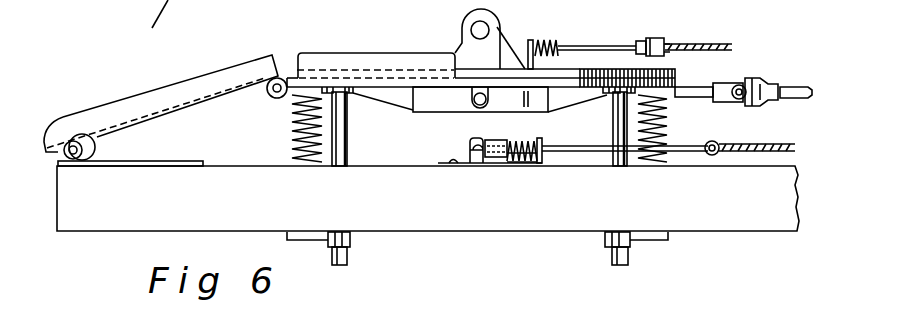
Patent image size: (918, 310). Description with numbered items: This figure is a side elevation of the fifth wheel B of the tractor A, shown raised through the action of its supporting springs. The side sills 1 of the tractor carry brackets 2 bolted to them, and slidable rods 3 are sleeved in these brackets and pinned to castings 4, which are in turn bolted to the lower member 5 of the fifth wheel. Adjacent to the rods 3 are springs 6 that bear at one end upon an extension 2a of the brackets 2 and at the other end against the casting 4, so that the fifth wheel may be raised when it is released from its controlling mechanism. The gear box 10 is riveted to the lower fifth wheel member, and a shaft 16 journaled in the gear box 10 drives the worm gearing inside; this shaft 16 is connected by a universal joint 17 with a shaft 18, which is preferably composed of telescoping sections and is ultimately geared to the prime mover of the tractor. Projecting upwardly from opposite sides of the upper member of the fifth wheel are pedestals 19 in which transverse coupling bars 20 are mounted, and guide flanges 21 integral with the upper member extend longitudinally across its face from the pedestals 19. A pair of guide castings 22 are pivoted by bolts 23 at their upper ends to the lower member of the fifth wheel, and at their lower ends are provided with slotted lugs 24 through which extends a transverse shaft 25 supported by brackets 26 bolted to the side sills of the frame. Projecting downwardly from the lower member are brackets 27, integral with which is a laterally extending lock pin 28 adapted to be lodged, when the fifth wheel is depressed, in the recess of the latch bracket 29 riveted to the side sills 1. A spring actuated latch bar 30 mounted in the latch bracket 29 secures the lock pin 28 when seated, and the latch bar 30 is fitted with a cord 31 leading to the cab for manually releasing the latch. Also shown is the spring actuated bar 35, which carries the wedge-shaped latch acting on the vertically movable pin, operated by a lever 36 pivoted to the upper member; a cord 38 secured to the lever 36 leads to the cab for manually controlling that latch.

The side sills 1 is at (428, 198).
The brackets 2 is at (350, 240).
The extension of the brackets 2a is at (313, 239).
The slidable rods 3 is at (347, 148).
The castings 4 is at (304, 91).
The lower member 5 is at (382, 85).
The springs 6 is at (292, 135).
The gear box 10 is at (434, 113).
The shaft 16 is at (695, 88).
The universal joint 17 is at (765, 80).
The shaft 18 is at (806, 92).
The pedestals 19 is at (502, 36).
The transverse coupling bars 20 is at (484, 24).
The guide flanges 21 is at (357, 63).
The guide castings 22 is at (167, 97).
The bolts 23 is at (274, 96).
The slotted lugs 24 is at (93, 148).
The transverse shaft 25 is at (72, 140).
The brackets 26 is at (85, 160).
The brackets 27 is at (477, 89).
The lock pin 28 is at (483, 106).
The latch bracket 29 is at (499, 143).
The latch bar 30 is at (585, 143).
The cord 31 is at (773, 148).
The spring actuated bar 35 is at (531, 41).
The lever 36 is at (641, 40).
The cord 38 is at (703, 41).
The tractor A is at (525, 243).
The fifth wheel B is at (625, 69).